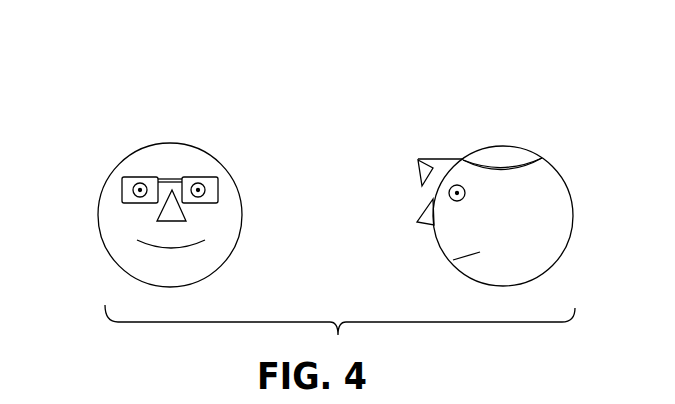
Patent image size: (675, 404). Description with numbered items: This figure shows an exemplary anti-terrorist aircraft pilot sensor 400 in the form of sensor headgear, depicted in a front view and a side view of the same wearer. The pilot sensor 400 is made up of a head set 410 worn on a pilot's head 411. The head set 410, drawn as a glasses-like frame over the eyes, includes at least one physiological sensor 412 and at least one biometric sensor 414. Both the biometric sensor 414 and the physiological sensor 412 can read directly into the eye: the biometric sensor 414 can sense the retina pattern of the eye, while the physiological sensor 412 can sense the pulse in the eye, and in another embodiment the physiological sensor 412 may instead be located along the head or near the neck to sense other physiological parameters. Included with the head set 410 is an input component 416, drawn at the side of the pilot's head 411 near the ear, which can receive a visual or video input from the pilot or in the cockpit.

The pilot sensor 400 is at (382, 76).
The head set 410 is at (130, 178).
The pilot's head 411 is at (100, 233).
The physiological sensor 412 is at (177, 180).
The biometric sensor 414 is at (218, 185).
The input component 416 is at (418, 160).